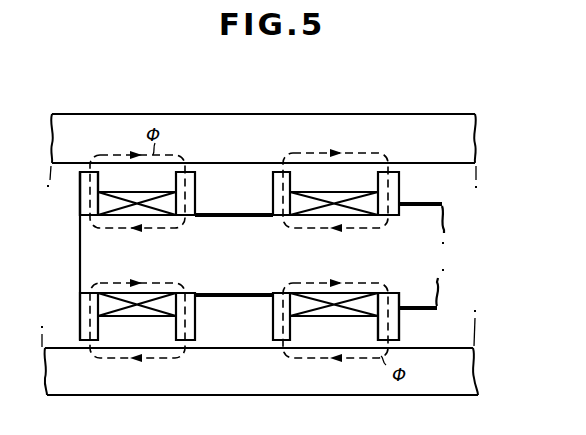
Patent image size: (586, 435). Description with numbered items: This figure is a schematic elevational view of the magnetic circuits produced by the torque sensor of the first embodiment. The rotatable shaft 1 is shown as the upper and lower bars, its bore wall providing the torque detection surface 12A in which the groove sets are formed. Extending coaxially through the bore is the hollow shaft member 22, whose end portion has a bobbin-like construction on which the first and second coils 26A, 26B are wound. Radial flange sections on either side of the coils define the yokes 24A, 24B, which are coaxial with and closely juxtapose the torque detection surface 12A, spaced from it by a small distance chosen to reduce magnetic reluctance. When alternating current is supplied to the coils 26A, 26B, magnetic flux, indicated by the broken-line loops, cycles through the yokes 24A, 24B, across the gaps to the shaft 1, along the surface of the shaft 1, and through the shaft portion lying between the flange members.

The shaft 1 is at (87, 118).
The torque detection surface 12A is at (236, 163).
The hollow shaft member 22 is at (432, 200).
The yoke 24A is at (79, 204).
The yoke 24B is at (399, 328).
The first coil 26A is at (105, 306).
The second coil 26B is at (308, 206).